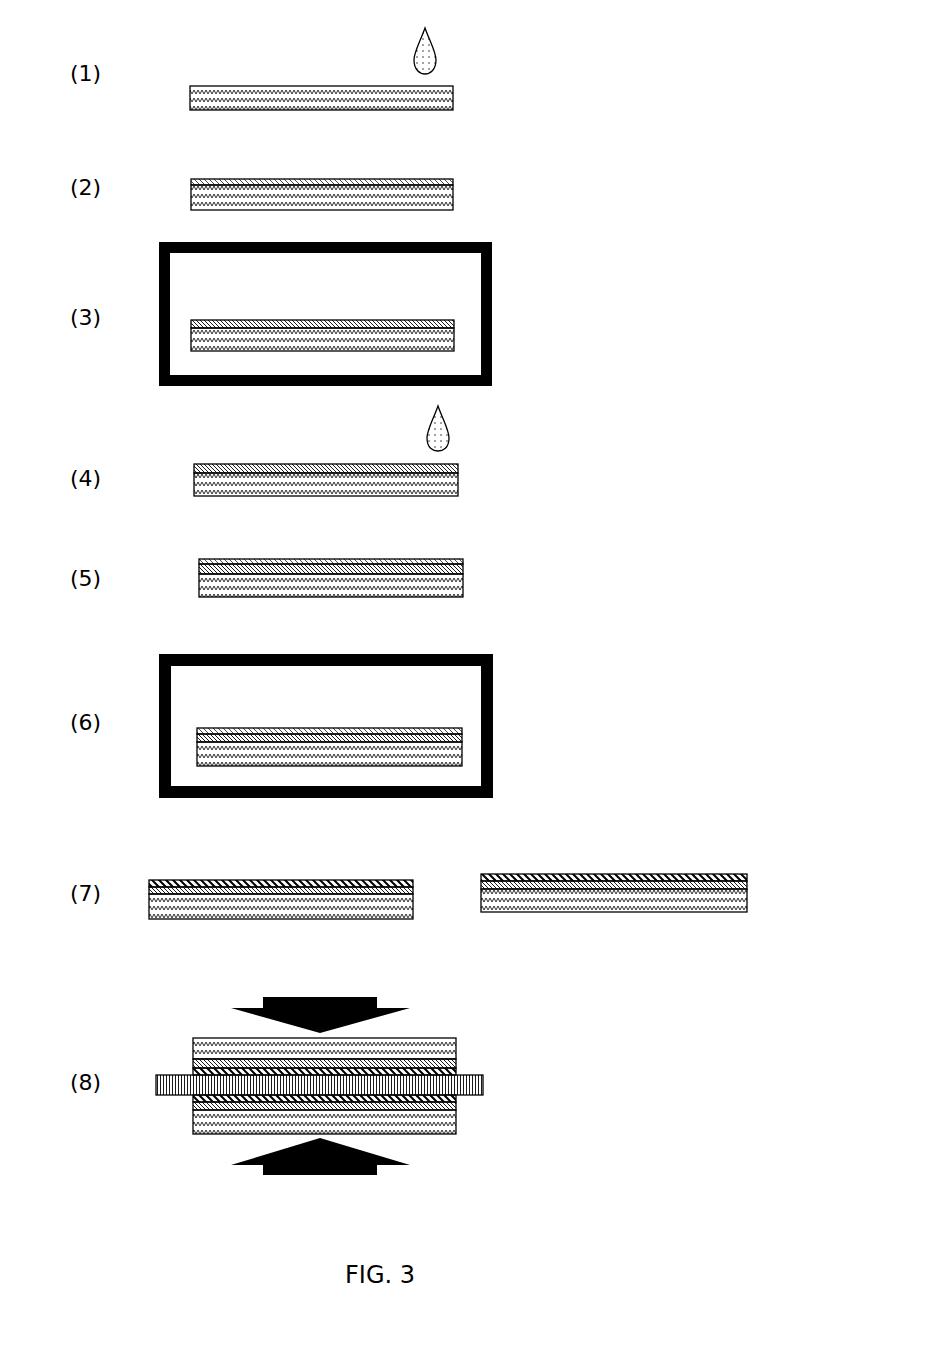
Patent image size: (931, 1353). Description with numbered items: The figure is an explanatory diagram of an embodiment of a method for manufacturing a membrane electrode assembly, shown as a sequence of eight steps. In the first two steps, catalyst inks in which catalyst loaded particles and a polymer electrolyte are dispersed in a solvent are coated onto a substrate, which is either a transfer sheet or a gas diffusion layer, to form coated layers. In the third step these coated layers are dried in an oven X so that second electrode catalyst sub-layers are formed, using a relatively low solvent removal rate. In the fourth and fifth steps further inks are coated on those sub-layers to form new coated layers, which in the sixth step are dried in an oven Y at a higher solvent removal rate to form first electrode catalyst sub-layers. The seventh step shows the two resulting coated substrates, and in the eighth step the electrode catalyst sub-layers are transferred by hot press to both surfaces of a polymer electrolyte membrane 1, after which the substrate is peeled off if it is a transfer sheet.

The polymer electrolyte membrane 1 is at (473, 1085).
The oven X is at (492, 262).
The oven Y is at (493, 670).